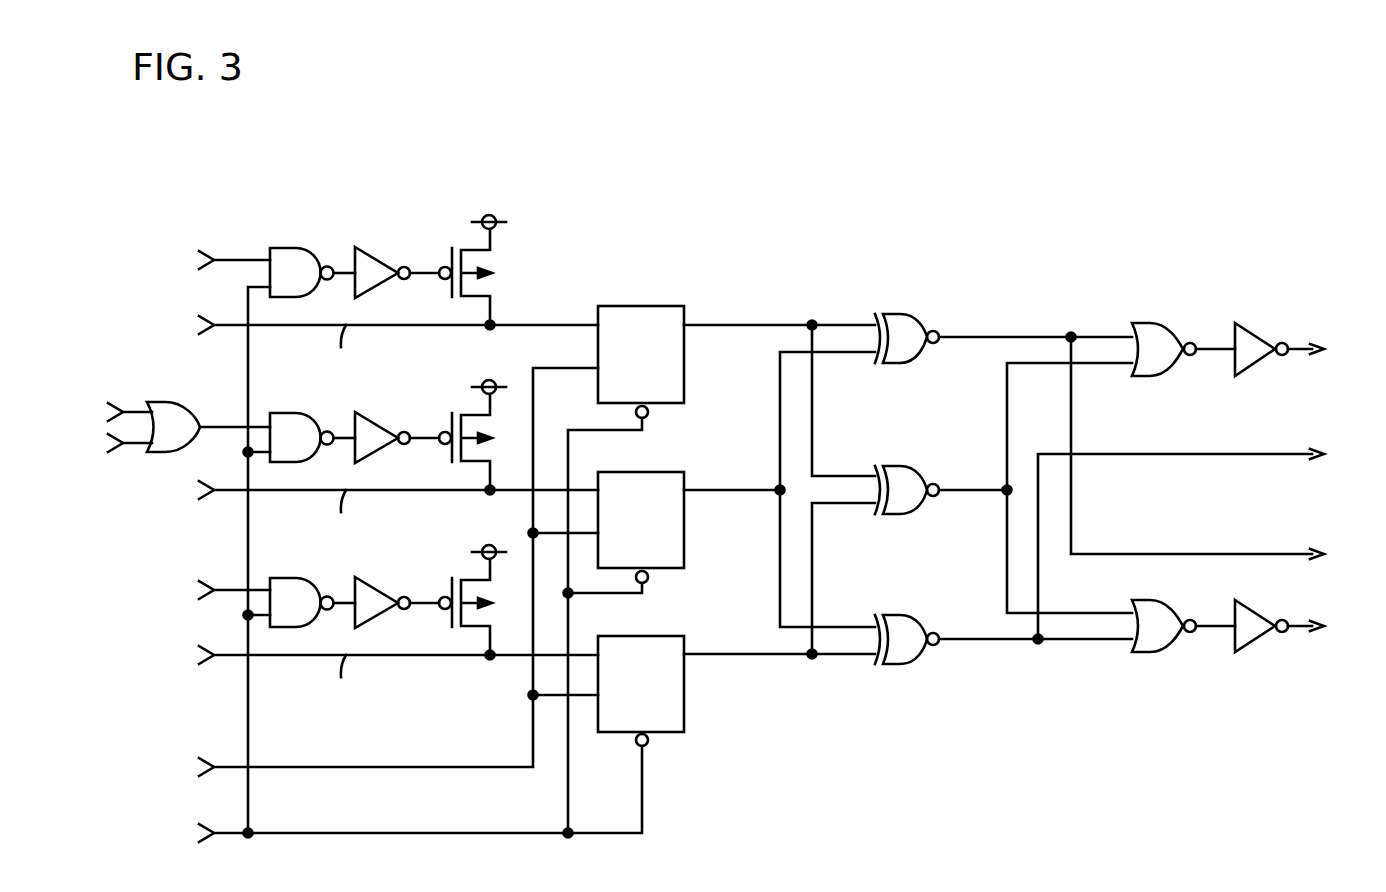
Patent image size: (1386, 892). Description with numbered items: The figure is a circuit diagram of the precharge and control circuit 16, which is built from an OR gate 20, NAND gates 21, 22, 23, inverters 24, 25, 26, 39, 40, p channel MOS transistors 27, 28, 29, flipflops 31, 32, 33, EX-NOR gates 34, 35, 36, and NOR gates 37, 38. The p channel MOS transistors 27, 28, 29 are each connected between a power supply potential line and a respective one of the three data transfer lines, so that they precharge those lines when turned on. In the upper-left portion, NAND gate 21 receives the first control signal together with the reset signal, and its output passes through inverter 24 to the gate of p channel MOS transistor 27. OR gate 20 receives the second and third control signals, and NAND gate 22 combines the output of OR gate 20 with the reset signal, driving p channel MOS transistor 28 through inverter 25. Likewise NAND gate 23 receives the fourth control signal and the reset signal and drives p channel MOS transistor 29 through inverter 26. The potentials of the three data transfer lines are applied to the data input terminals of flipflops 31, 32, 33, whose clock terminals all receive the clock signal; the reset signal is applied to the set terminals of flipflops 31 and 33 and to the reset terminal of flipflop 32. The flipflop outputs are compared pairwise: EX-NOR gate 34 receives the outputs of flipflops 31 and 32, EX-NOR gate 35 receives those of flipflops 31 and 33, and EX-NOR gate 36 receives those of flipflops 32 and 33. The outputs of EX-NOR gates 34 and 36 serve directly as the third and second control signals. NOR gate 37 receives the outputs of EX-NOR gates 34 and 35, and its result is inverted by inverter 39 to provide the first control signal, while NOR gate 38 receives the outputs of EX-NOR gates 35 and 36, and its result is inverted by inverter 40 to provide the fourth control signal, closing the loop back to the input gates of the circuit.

The precharge and control circuit 16 is at (170, 190).
The OR gate 20 is at (176, 402).
The NAND gate 21 is at (290, 248).
The NAND gate 22 is at (292, 413).
The NAND gate 23 is at (292, 578).
The inverter 24 is at (377, 260).
The inverter 25 is at (377, 425).
The inverter 26 is at (377, 590).
The p channel MOS transistor 27 is at (452, 262).
The p channel MOS transistor 28 is at (452, 427).
The p channel MOS transistor 29 is at (452, 592).
The flipflop 31 is at (684, 380).
The flipflop 32 is at (684, 543).
The flipflop 33 is at (684, 708).
The EX-NOR gate 34 is at (905, 363).
The EX-NOR gate 35 is at (905, 514).
The EX-NOR gate 36 is at (905, 664).
The NOR gate 37 is at (1157, 323).
The NOR gate 38 is at (1157, 652).
The inverter 39 is at (1256, 335).
The inverter 40 is at (1256, 641).